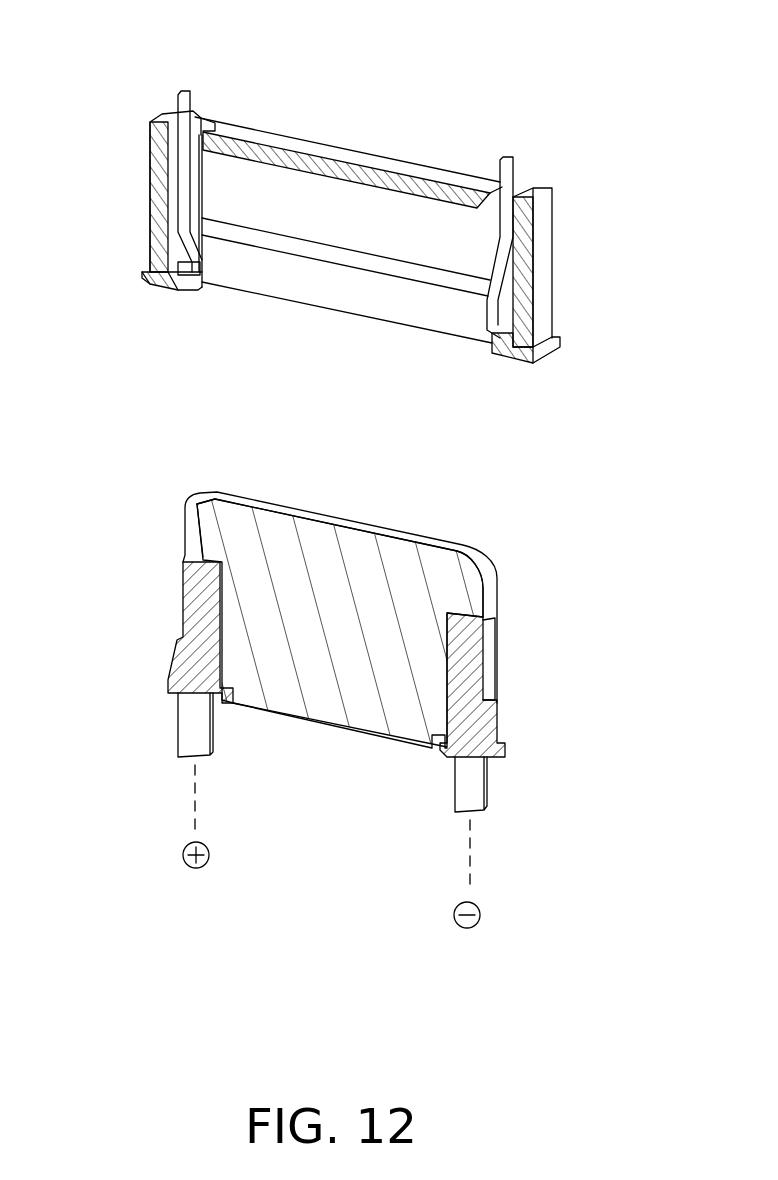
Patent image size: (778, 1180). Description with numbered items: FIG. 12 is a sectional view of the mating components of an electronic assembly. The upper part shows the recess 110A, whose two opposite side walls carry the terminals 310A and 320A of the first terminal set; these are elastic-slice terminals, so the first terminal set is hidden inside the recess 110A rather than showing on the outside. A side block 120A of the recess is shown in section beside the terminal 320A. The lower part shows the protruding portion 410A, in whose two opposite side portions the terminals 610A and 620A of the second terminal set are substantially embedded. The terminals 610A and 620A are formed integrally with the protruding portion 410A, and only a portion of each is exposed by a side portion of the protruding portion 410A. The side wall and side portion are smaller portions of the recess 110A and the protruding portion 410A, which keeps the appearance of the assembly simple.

The recess 110A is at (463, 327).
The housing end block 120A is at (542, 270).
The terminal 310A is at (183, 90).
The terminal 320A is at (508, 158).
The protruding portion 410A is at (205, 522).
The terminal 610A is at (190, 612).
The terminal 620A is at (485, 723).